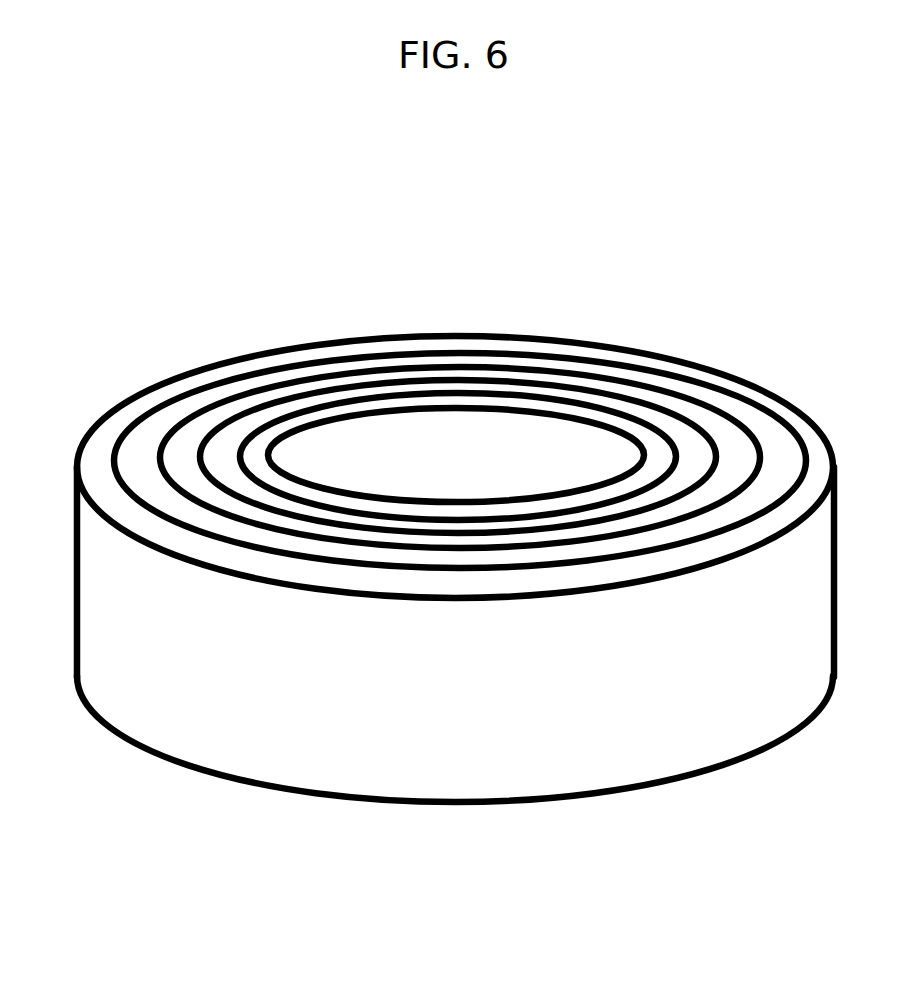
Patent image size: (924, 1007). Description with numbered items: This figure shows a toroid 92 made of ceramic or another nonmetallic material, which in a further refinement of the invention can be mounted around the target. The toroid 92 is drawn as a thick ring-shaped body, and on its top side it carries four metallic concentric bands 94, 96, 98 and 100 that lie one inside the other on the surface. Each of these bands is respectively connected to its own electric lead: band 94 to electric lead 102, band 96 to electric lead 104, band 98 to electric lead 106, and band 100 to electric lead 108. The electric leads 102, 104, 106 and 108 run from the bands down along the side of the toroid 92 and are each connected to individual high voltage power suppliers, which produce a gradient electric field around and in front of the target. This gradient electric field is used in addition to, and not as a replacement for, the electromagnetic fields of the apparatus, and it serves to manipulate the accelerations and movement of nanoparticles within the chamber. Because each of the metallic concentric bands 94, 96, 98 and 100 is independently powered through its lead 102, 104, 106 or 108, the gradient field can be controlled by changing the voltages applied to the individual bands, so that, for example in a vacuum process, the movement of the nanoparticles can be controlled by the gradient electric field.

The toroid 92 is at (455, 569).
The metallic concentric band 94 is at (632, 412).
The metallic concentric band 96 is at (687, 420).
The metallic concentric band 98 is at (750, 433).
The metallic concentric band 100 is at (818, 433).
The electric lead 102 is at (535, 657).
The electric lead 104 is at (637, 702).
The electric lead 106 is at (717, 702).
The electric lead 108 is at (780, 690).